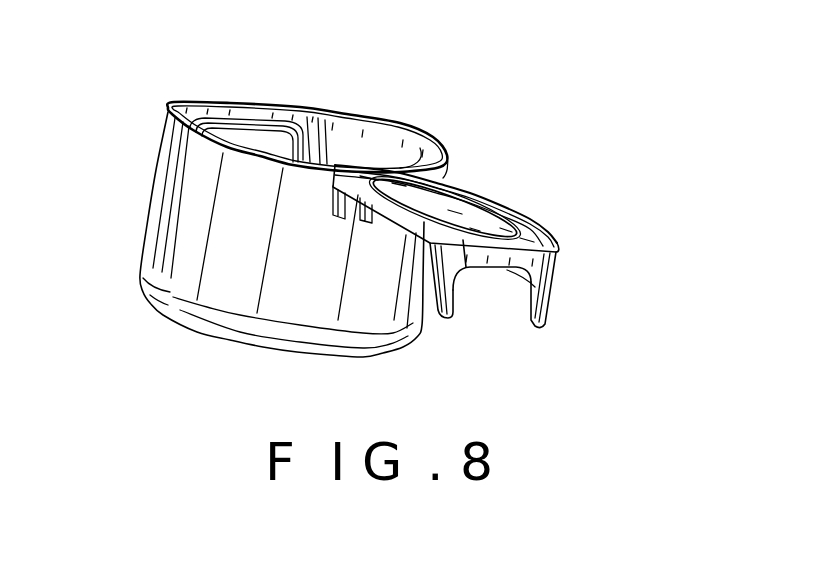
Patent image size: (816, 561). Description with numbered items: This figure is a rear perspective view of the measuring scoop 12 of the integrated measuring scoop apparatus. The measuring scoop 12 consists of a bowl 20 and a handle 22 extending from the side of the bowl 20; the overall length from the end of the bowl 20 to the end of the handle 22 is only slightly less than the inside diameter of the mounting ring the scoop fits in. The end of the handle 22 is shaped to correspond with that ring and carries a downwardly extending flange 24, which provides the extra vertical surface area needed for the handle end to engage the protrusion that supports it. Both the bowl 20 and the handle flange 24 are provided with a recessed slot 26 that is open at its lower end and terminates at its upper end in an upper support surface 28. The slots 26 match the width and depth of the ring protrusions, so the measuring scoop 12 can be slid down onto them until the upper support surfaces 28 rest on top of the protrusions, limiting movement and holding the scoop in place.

The measuring scoop 12 is at (478, 146).
The bowl 20 is at (150, 197).
The handle 22 is at (515, 225).
The flange 24 is at (546, 316).
The recessed slot 26 is at (500, 293).
The upper support surface 28 is at (250, 137).